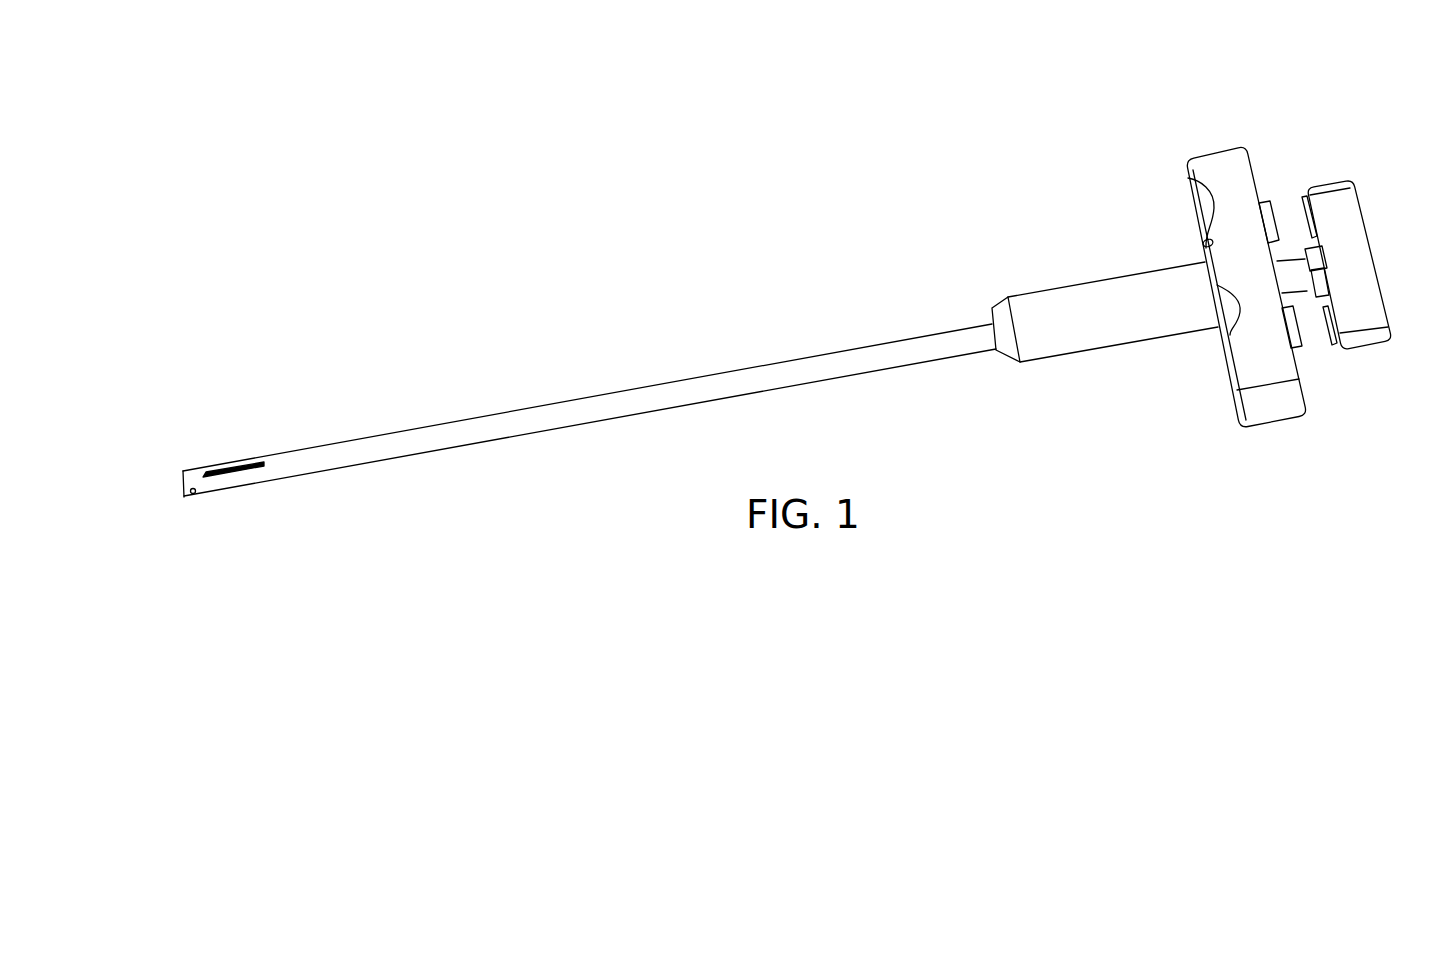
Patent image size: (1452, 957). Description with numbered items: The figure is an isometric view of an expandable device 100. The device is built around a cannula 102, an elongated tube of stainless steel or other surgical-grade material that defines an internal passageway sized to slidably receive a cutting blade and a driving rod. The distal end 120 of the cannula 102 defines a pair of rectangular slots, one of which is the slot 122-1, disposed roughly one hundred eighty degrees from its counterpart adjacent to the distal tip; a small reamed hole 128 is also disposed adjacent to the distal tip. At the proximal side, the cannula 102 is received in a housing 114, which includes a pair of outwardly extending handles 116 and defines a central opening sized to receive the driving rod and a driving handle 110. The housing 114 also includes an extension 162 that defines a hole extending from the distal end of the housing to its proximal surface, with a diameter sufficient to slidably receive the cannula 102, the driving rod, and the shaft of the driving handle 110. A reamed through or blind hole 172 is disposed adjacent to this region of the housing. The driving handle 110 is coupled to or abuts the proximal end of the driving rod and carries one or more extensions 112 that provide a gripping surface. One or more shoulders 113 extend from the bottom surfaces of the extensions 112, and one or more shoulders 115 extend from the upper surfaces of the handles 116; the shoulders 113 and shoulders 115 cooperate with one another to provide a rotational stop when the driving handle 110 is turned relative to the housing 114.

The expandable device 100 is at (880, 142).
The cannula 102 is at (576, 397).
The driving handle 110 is at (1373, 258).
The extensions 112 is at (1328, 183).
The shoulders 113 is at (1299, 196).
The housing 114 is at (1186, 362).
The shoulders 115 is at (1270, 213).
The handles 116 is at (1212, 146).
The distal end 120 is at (174, 506).
The rectangular slot 122-1 is at (230, 462).
The reamed hole 128 is at (195, 495).
The extension 162 is at (1050, 287).
The reamed through or blind hole 172 is at (1204, 243).